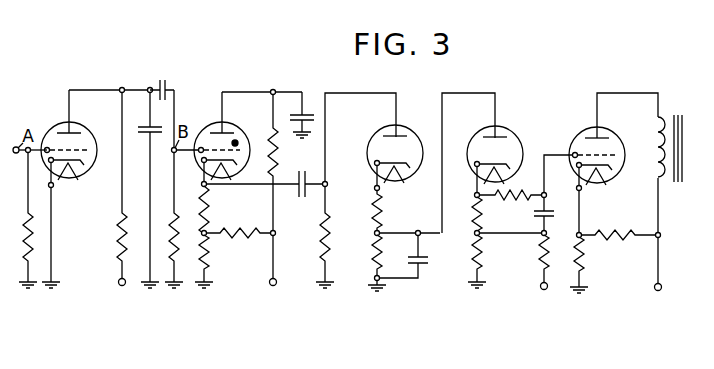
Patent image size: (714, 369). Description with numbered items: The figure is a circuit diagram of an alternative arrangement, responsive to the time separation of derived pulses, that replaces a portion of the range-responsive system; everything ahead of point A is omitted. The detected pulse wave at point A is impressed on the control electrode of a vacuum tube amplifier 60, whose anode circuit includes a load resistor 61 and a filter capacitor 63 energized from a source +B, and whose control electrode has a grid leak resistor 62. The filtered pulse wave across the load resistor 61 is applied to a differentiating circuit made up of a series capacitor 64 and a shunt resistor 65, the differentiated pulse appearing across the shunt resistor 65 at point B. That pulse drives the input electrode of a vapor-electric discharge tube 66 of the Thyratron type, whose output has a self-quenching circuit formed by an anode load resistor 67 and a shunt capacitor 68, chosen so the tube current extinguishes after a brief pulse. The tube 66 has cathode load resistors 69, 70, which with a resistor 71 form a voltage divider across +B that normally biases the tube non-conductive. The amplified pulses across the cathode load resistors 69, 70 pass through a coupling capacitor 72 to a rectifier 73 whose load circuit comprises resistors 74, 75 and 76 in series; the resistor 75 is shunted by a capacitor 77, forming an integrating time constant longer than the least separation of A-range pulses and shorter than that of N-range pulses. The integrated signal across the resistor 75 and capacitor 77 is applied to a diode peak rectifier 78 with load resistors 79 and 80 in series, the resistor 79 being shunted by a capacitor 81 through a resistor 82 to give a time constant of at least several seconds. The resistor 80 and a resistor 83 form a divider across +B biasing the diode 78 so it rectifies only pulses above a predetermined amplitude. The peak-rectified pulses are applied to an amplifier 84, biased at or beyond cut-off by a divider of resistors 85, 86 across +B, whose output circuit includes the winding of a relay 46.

The relay 46 is at (675, 114).
The vacuum tube amplifier 60 is at (53, 131).
The load resistor 61 is at (120, 226).
The grid leak resistor 62 is at (28, 222).
The filter capacitor 63 is at (147, 134).
The series capacitor 64 is at (165, 88).
The shunt resistor 65 is at (171, 225).
The vapor-electric discharge tube 66 is at (206, 131).
The anode load resistor 67 is at (270, 146).
The shunt capacitor 68 is at (297, 122).
The cathode load resistor 69 is at (201, 220).
The cathode load resistor 70 is at (206, 262).
The resistor 71 is at (234, 239).
The coupling capacitor 72 is at (302, 196).
The rectifier 73 is at (373, 138).
The resistor 74 is at (323, 250).
The resistor 75 is at (374, 258).
The resistor 76 is at (374, 216).
The capacitor 77 is at (418, 262).
The diode peak rectifier 78 is at (480, 139).
The resistor 79 is at (474, 216).
The resistor 80 is at (474, 262).
The capacitor 81 is at (541, 218).
The resistor 82 is at (516, 200).
The resistor 83 is at (541, 258).
The amplifier 84 is at (580, 139).
The resistor 85 is at (580, 262).
The resistor 86 is at (624, 232).